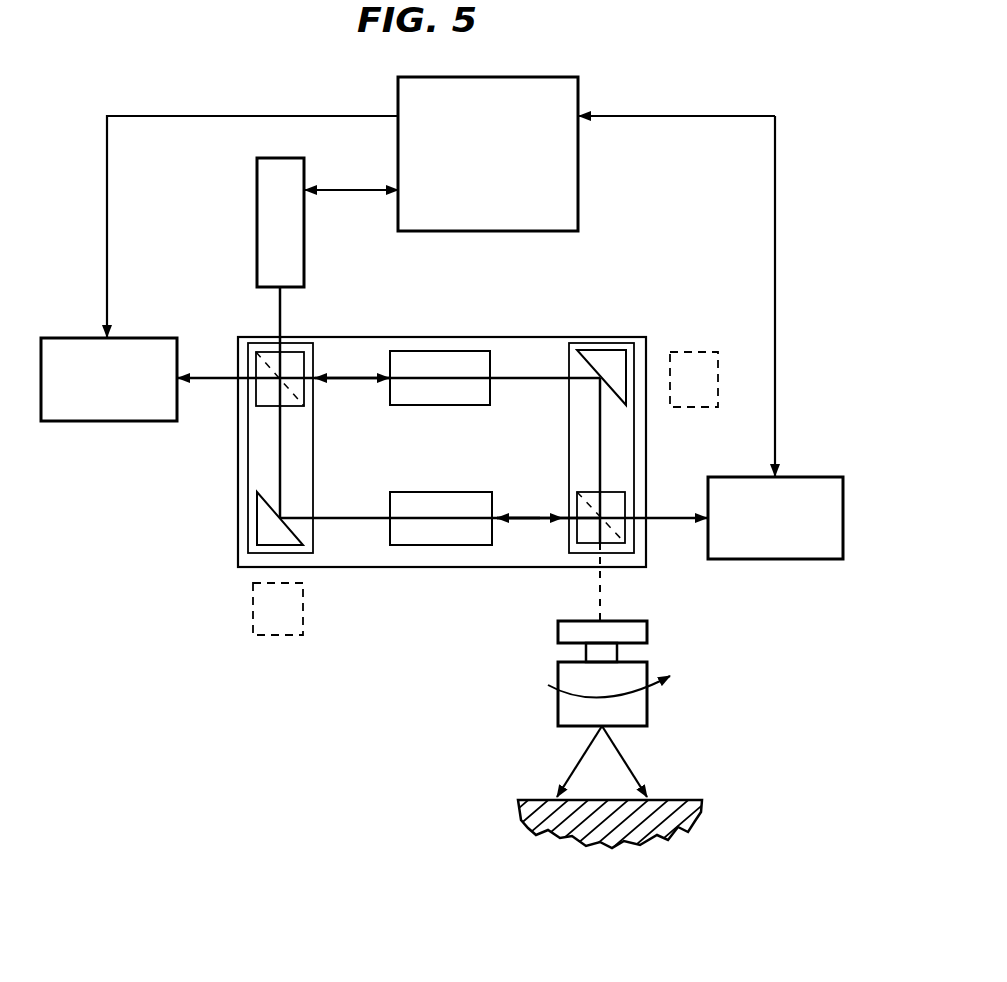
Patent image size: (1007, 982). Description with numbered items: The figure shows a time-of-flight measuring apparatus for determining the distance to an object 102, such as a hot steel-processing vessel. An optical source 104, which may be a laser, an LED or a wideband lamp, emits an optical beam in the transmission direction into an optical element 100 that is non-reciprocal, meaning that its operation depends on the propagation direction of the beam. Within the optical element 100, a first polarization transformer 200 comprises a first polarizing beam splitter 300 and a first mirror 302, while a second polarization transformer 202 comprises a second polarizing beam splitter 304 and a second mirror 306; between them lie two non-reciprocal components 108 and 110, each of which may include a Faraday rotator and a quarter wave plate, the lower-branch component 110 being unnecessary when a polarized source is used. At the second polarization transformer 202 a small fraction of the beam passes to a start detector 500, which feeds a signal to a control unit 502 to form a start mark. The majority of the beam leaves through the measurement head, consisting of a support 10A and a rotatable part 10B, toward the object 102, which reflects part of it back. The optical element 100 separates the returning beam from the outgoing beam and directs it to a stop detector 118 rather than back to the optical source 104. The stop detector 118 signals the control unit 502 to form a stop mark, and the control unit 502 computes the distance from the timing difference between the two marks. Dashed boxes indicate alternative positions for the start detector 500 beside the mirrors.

The support 10A is at (558, 631).
The rotatable part 10B is at (556, 688).
The optical element 100 is at (392, 568).
The object 102 is at (680, 800).
The optical source 104 is at (257, 192).
The non-reciprocal component 108 is at (410, 405).
The non-reciprocal component 110 is at (462, 492).
The stop detector 118 is at (108, 422).
The first polarization transformer 200 is at (315, 355).
The second polarization transformer 202 is at (597, 343).
The first polarizing beam splitter 300 is at (250, 364).
The first mirror 302 is at (258, 520).
The second polarizing beam splitter 304 is at (634, 370).
The second mirror 306 is at (634, 507).
The start detector 500 is at (772, 560).
The control unit 502 is at (488, 232).